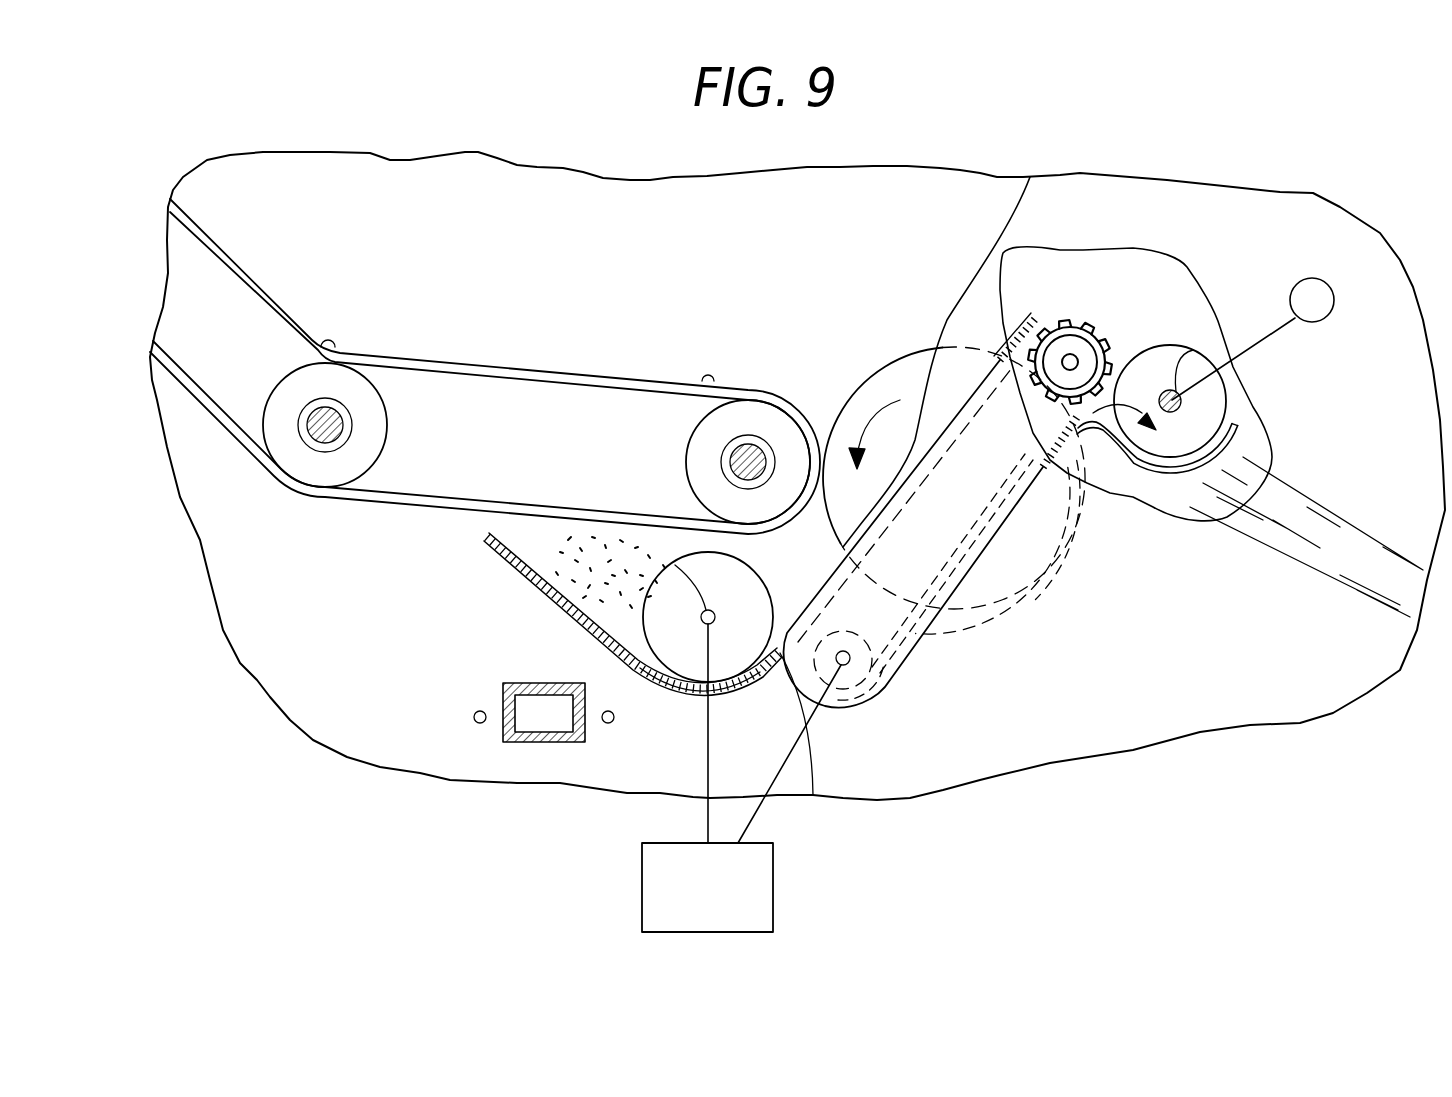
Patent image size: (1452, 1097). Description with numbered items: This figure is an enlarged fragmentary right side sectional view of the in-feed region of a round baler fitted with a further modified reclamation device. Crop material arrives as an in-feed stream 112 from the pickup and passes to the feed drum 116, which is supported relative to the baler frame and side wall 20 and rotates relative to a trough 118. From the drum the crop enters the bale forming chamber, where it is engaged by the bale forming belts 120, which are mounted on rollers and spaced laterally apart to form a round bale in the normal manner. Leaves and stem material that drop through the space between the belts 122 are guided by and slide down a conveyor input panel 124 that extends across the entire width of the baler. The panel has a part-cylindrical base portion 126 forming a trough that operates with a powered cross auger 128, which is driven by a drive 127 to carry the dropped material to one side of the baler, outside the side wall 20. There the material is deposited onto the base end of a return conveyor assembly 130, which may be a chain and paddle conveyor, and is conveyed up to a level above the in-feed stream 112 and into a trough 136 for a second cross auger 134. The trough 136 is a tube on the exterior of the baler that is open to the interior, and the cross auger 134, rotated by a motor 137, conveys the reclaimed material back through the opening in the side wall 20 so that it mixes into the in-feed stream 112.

The side wall 20 is at (532, 238).
The in-feed of crop material 112 is at (1340, 512).
The feed drum 116 is at (897, 360).
The trough 118 is at (1040, 640).
The bale forming belts 120 is at (613, 372).
The space between the belts 122 is at (568, 553).
The conveyor input panel 124 is at (570, 613).
The base portion 126 is at (733, 700).
The drive 127 is at (642, 877).
The cross auger 128 is at (740, 598).
The return conveyor assembly 130 is at (913, 663).
The cross auger 134 is at (1210, 400).
The trough 136 is at (1172, 480).
The motor 137 is at (1307, 275).